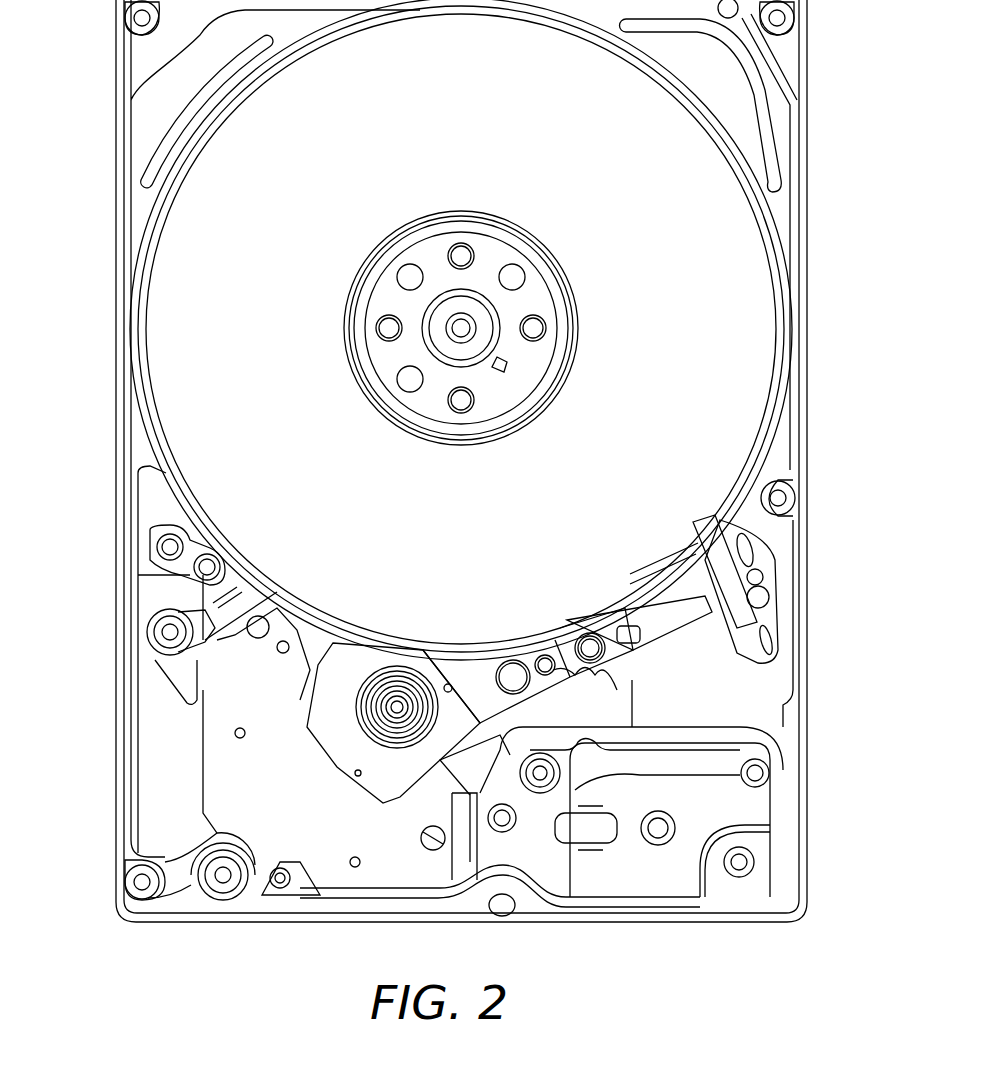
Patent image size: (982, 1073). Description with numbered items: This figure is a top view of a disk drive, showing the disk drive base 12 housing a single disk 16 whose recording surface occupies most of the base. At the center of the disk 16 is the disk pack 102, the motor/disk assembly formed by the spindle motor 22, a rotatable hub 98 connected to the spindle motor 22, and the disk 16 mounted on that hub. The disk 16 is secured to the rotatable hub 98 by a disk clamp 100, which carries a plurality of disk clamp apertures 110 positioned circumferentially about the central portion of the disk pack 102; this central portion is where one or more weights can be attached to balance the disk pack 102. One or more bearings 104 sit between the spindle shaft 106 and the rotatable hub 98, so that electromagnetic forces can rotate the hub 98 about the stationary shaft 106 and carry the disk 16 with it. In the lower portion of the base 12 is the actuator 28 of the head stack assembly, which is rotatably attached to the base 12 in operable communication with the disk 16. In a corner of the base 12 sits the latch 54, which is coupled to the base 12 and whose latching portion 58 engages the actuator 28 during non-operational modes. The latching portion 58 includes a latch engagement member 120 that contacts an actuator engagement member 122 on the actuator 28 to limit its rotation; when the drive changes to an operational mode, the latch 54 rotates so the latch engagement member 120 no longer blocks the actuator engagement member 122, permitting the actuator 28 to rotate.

The disk drive base 12 is at (461, 461).
The disk 16 is at (461, 329).
The spindle motor 22 is at (590, 310).
The actuator 28 is at (483, 665).
The latch 54 is at (104, 603).
The latching portion 58 is at (150, 680).
The rotatable hub 98 is at (348, 421).
The disk clamp 100 is at (535, 362).
The disk pack 102 is at (776, 214).
The bearing 104 is at (433, 328).
The spindle shaft 106 is at (463, 337).
The disk clamp apertures 110 is at (465, 246).
The latch engagement member 120 is at (185, 683).
The actuator engagement member 122 is at (257, 615).